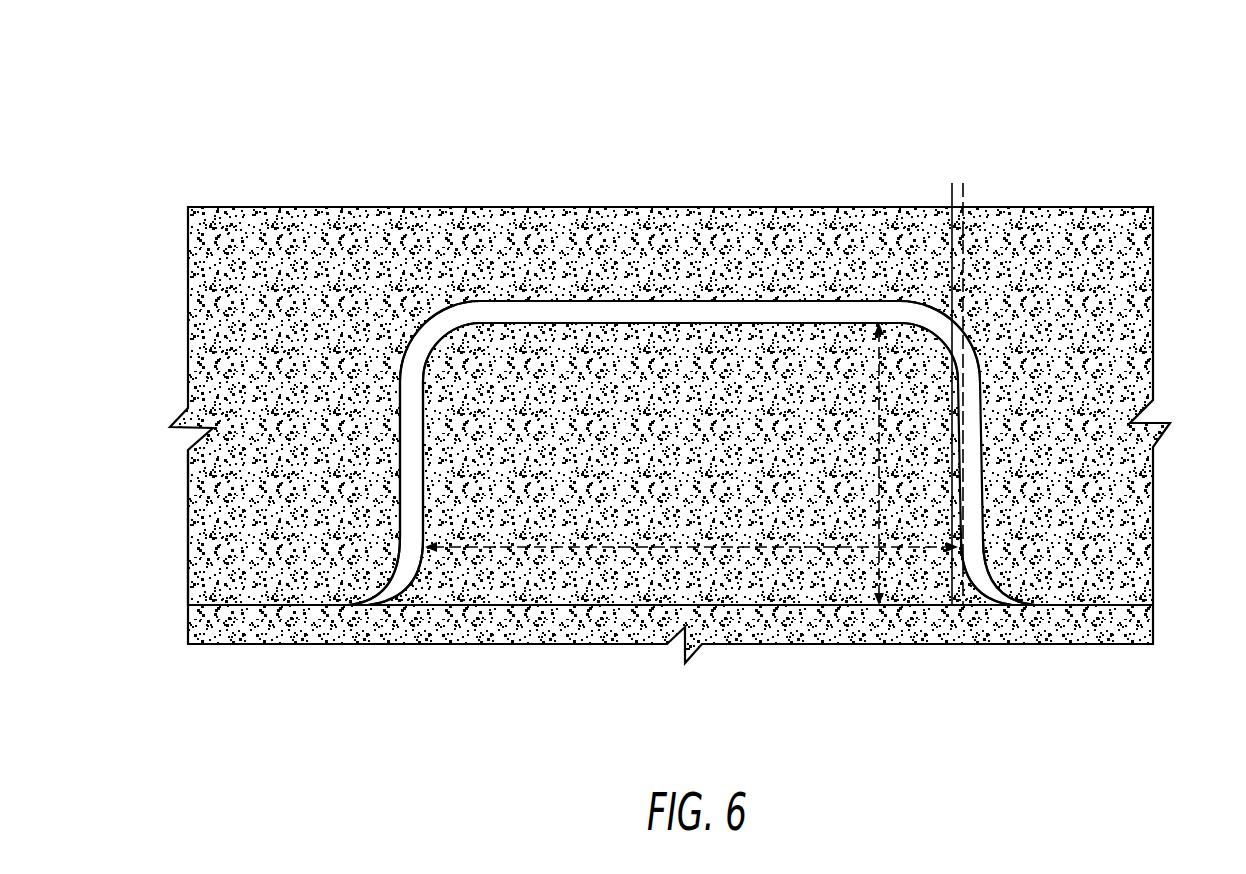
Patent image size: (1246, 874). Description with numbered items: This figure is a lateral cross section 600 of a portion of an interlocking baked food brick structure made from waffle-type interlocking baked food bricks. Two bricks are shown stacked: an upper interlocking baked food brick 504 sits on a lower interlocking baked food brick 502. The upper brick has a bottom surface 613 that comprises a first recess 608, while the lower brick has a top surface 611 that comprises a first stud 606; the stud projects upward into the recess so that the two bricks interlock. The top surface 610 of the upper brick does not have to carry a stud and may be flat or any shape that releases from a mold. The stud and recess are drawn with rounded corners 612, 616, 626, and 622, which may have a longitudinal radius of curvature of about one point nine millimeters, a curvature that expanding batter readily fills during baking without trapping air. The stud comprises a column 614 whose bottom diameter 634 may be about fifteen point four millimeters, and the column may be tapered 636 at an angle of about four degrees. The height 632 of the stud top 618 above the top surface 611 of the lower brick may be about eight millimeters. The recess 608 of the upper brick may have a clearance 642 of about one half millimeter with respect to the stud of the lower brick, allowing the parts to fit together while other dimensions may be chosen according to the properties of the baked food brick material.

The lateral cross section 600 is at (422, 102).
The lower interlocking baked food brick 502 is at (563, 622).
The upper interlocking baked food brick 504 is at (228, 222).
The first stud 606 is at (722, 320).
The first recess 608 is at (438, 328).
The top surface of the upper interlocking baked food brick 610 is at (315, 218).
The top surface of the lower interlocking baked food brick 611 is at (231, 618).
The rounded corner 612 is at (384, 576).
The bottom surface of the upper interlocking baked food brick 613 is at (223, 586).
The column 614 is at (477, 538).
The rounded corner 616 is at (453, 346).
The stud top 618 is at (596, 326).
The rounded corner 622 is at (1012, 576).
The rounded corner 626 is at (914, 328).
The height of the stud top 632 is at (937, 332).
The bottom diameter 634 is at (783, 598).
The taper 636 is at (973, 367).
The clearance 642 is at (573, 312).